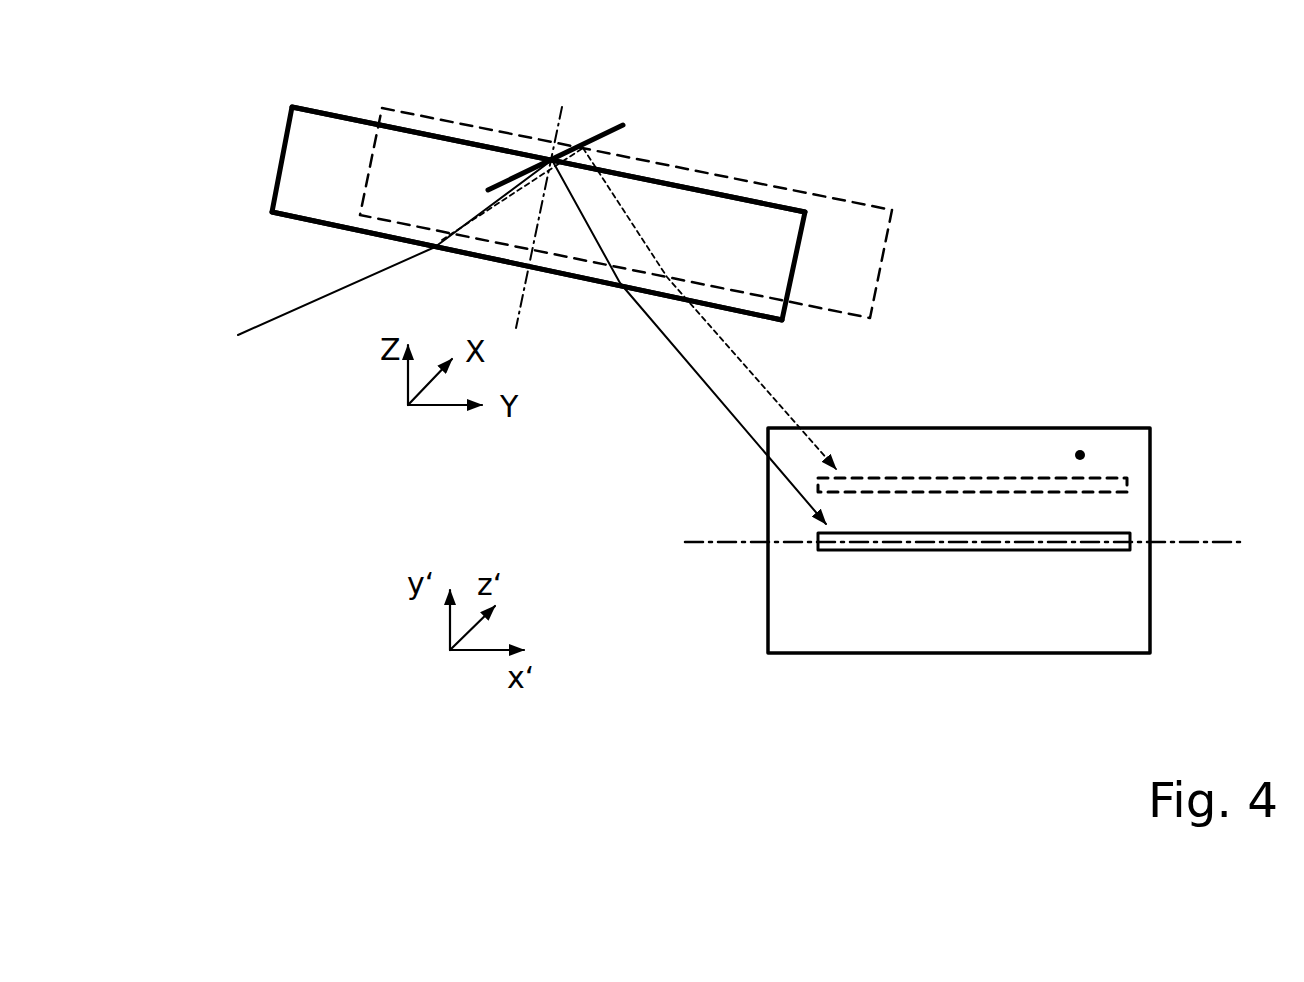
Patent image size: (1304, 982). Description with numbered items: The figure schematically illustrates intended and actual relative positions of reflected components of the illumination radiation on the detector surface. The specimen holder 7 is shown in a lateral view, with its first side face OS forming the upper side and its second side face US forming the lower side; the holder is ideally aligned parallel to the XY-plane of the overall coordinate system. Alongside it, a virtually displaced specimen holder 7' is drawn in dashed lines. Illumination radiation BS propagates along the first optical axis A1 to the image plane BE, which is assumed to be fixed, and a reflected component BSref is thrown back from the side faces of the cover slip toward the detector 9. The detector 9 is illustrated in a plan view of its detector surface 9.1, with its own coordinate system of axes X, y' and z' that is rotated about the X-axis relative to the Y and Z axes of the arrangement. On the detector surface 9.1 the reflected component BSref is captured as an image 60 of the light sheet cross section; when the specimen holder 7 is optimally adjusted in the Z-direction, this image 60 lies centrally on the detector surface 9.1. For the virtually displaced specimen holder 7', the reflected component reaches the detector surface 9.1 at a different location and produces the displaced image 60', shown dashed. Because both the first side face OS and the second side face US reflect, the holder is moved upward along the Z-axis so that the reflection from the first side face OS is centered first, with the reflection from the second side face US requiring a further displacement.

The specimen holder 7 is at (538, 178).
The virtually displaced specimen holder 7' is at (626, 213).
The first side face OS is at (282, 104).
The second side face US is at (263, 206).
The image plane BE is at (613, 125).
The first optical axis A1 is at (387, 263).
The illumination radiation BS is at (308, 300).
The reflected component BSref is at (777, 402).
The detector 9 is at (1160, 585).
The detector surface 9.1 is at (1080, 455).
The image 60 is at (901, 577).
The image of the light sheet cross section for displaced specimen holder 60' is at (1033, 441).